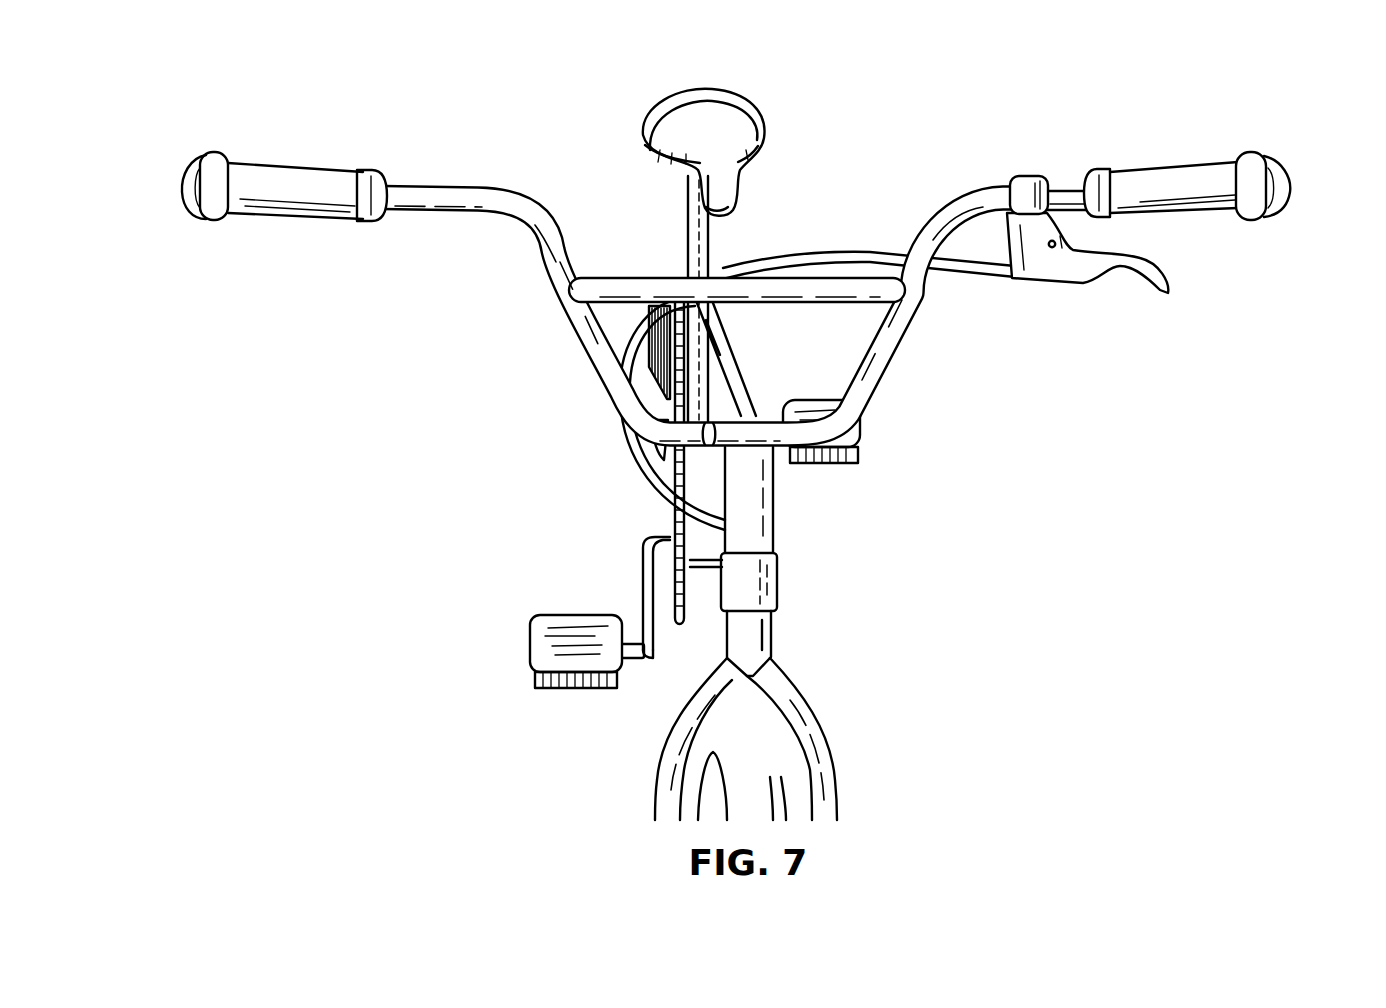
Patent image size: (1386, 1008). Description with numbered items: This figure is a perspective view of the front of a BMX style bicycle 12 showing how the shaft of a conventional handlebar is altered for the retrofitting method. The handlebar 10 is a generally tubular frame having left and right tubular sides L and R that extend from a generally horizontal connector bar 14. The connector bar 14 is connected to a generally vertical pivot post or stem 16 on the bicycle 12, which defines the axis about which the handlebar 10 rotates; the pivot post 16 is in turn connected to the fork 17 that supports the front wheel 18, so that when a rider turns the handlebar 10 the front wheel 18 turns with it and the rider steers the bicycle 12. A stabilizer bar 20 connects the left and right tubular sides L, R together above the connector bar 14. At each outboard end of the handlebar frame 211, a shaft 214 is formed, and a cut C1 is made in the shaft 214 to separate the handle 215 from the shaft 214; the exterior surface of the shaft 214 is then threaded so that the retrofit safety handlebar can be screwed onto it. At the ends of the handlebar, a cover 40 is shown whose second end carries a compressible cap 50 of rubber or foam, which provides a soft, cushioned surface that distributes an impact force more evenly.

The handlebar 10 is at (953, 190).
The bicycle 12 is at (983, 502).
The connector bar 14 is at (763, 424).
The pivot post 16 is at (777, 453).
The fork 17 is at (818, 703).
The front wheel 18 is at (700, 737).
The stabilizer bar 20 is at (802, 275).
The cover 40 is at (277, 178).
The compressible cap 50 is at (182, 182).
The handlebar frame 211 is at (426, 184).
The shaft 214 is at (407, 212).
The handle 215 is at (342, 170).
The cut C1 is at (1088, 182).
The right tubular side R is at (533, 208).
The left tubular side L is at (915, 225).